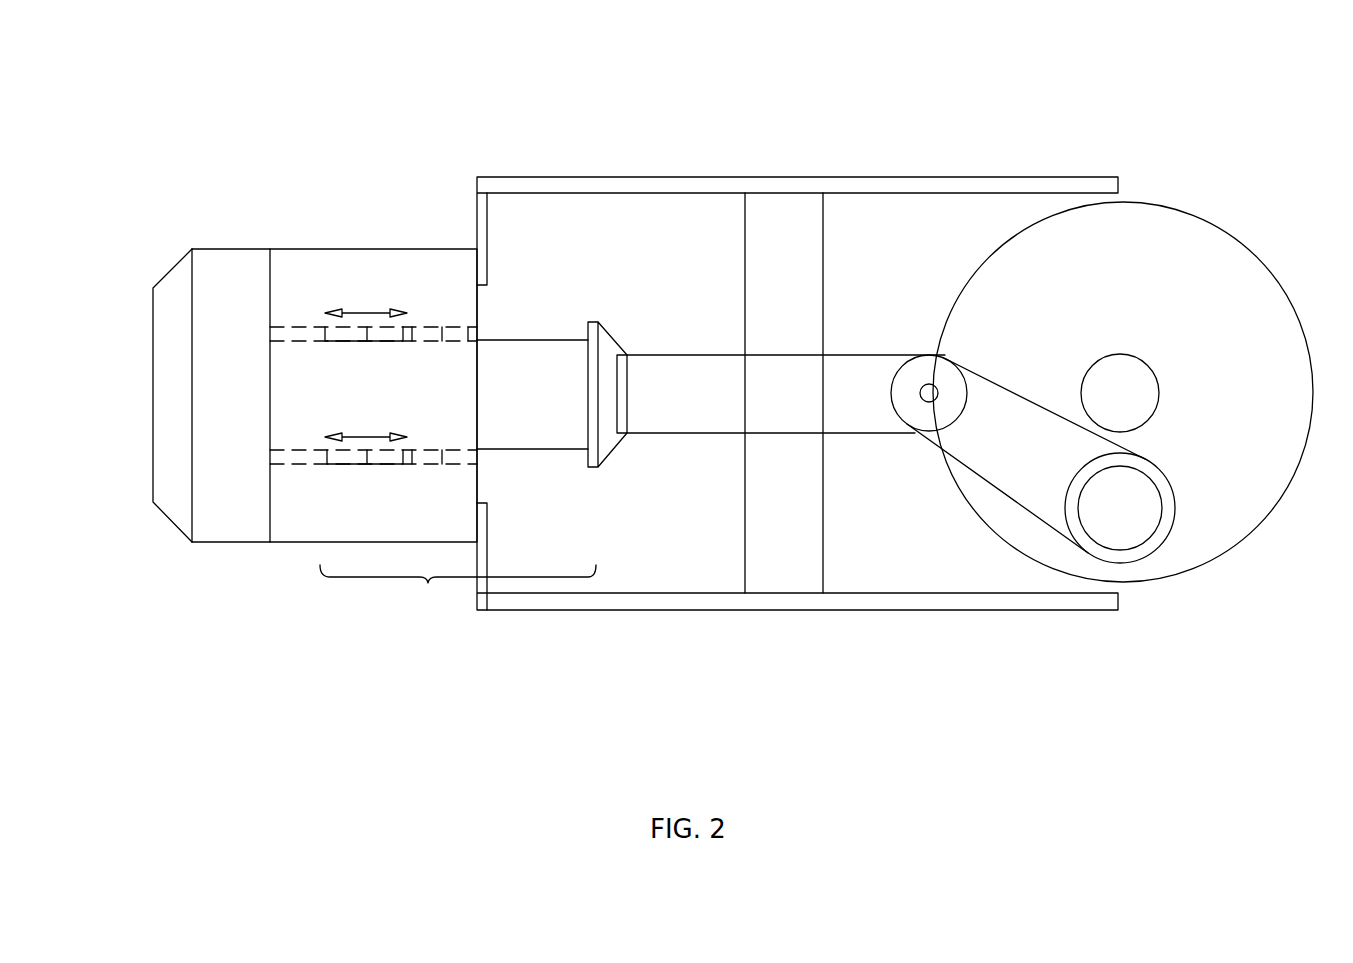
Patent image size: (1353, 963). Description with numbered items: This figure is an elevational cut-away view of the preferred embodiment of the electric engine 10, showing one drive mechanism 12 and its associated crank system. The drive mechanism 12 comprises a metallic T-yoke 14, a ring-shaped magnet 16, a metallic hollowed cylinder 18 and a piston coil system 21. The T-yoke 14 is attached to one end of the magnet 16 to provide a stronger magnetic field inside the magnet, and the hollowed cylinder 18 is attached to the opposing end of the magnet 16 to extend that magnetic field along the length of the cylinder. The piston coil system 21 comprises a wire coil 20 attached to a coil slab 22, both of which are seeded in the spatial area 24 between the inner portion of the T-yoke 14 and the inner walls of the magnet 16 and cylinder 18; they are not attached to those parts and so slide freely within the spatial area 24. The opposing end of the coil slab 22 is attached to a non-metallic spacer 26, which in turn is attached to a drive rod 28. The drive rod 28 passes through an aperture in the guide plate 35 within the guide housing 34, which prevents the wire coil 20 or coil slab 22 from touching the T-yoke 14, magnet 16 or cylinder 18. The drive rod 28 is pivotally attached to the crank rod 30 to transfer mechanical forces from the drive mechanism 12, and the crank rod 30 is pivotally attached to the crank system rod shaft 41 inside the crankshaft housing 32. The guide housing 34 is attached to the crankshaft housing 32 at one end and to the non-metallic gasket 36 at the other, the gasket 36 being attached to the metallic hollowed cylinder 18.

The electric engine 10 is at (654, 82).
The drive mechanism 12 is at (193, 249).
The metallic T-yoke 14 is at (178, 530).
The ring-shaped magnet 16 is at (233, 542).
The metallic hollowed cylinder 18 is at (306, 326).
The wire coil 20 is at (380, 462).
The piston coil system 21 is at (458, 592).
The coil slab 22 is at (540, 428).
The spatial area 24 is at (352, 249).
The non-metallic spacer/coil-rod-connector 26 is at (602, 333).
The drive rod 28 is at (688, 435).
The crank rod 30 is at (1040, 522).
The crank system housing 32 is at (983, 177).
The guide plate housing 34 is at (670, 177).
The guide plate/rod guide 35 is at (788, 208).
The non-metallic gasket 36 is at (490, 222).
The crank system rod shaft 41 is at (1135, 532).